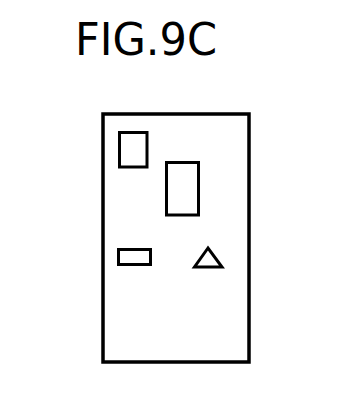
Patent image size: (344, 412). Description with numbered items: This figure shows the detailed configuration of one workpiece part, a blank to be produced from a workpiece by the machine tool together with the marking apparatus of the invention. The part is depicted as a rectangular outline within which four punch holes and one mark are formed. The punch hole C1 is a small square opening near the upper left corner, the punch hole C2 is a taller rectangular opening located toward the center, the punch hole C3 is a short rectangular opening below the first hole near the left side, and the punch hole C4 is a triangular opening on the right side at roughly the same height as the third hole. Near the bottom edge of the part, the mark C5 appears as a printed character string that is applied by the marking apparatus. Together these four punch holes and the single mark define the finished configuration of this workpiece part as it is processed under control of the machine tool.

The punch hole C1 is at (118, 152).
The punch hole C2 is at (200, 177).
The punch hole C3 is at (117, 256).
The punch hole C4 is at (218, 255).
The mark C5 is at (184, 355).